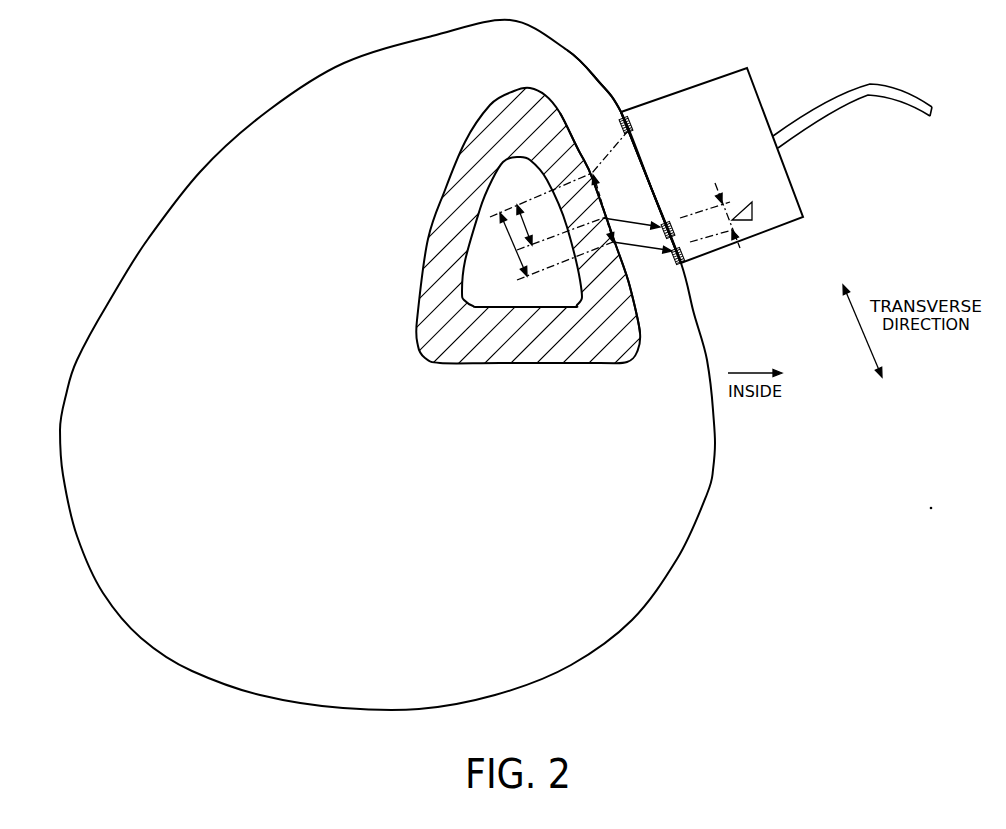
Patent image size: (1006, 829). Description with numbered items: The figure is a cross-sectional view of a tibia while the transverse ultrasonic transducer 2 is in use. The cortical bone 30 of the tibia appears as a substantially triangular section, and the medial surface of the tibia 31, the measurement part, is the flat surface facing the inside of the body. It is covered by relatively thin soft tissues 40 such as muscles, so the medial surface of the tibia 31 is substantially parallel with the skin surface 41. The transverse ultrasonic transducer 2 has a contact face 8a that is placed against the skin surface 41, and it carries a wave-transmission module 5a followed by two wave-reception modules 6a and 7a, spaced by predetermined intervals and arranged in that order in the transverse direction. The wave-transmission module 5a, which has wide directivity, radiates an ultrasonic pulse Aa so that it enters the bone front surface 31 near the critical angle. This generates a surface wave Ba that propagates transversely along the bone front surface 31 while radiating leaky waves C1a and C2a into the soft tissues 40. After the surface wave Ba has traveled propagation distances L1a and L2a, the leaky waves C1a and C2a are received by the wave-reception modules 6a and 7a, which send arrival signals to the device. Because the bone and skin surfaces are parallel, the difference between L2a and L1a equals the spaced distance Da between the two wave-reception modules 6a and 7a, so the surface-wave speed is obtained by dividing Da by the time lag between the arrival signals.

The transverse ultrasonic transducer 2 is at (737, 87).
The wave-transmission module 5a is at (635, 127).
The wave-reception module 6a is at (675, 222).
The wave-reception module 7a is at (685, 259).
The contact face 8a is at (649, 184).
The cortical bone 30 is at (613, 333).
The medial surface of the tibia 31 is at (595, 165).
The soft tissues 40 is at (657, 292).
The skin surface 41 is at (618, 111).
The ultrasonic pulse Aa is at (560, 174).
The surface wave Ba is at (597, 208).
The leaky wave C1a is at (588, 226).
The leaky wave C2a is at (594, 261).
The spaced distance between wave-reception modules Da is at (726, 215).
The propagation distance L1a is at (537, 225).
The propagation distance L2a is at (503, 244).